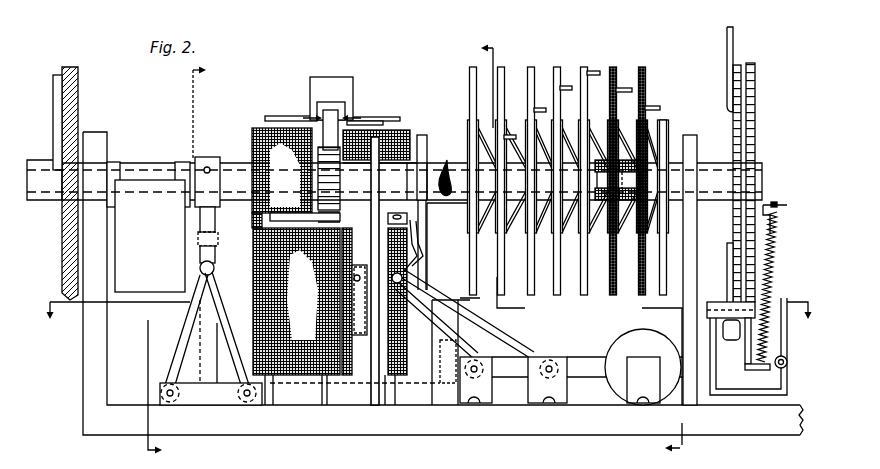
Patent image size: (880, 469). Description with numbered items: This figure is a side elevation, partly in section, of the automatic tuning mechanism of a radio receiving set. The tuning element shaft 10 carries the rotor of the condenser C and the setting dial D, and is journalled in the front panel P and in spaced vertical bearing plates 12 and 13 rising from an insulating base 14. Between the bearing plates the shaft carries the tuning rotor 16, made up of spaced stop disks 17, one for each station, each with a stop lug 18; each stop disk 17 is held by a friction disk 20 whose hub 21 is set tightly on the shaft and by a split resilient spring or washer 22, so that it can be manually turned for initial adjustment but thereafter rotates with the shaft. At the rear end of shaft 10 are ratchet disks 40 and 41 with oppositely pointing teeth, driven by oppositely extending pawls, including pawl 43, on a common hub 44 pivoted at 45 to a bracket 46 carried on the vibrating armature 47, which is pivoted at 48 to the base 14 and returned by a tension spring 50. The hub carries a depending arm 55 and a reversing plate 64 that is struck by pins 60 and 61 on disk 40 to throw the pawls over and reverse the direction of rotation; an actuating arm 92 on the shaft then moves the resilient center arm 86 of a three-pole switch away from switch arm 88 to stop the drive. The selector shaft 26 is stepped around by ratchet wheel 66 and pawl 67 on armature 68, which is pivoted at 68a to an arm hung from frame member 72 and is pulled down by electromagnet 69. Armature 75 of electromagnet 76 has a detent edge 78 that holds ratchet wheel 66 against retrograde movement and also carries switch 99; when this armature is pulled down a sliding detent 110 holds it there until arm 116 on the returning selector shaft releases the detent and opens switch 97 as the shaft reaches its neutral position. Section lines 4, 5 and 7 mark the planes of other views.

The front panel P is at (83, 330).
The tuning element shaft 10 is at (236, 170).
The setting dial D is at (62, 227).
The condenser C is at (150, 236).
The switch actuating arm 92 is at (218, 240).
The switch arm 88 is at (225, 320).
The resilient center arm 86 is at (207, 341).
The section line 5- 5 is at (182, 261).
The section line 7- 7 is at (426, 301).
The electromagnet 69 is at (254, 128).
The armature 68 is at (281, 116).
The frame member 72 is at (333, 77).
The pawl 67 is at (326, 140).
The ratchet wheel 66 is at (342, 150).
The armature pivot 68a is at (352, 118).
The bearing plate 12 is at (421, 135).
The selector shaft 26 is at (445, 165).
The armature 75 is at (270, 217).
The detent edge 78 is at (318, 216).
The electromagnet 76 is at (296, 301).
The switch 99 is at (357, 372).
The arm 116 is at (415, 252).
The detent 110 is at (405, 223).
The switch 97 is at (424, 278).
The armature pivot 48 is at (450, 383).
The insulating base 14 is at (453, 428).
The tuning rotor 16 is at (568, 157).
The hub 21 is at (609, 160).
The split resilient spring washer 22 is at (623, 158).
The stop disk 17 is at (535, 73).
The friction disk 20 is at (611, 128).
The stop lug 18 is at (645, 103).
The section line 4- 4 is at (589, 250).
The bearing plate 13 is at (689, 135).
The armature 47 is at (588, 357).
The bracket 46 is at (706, 343).
The reversing plate 64 is at (724, 330).
The pin 60 is at (727, 36).
The ratchet disk 40 is at (738, 65).
The ratchet disk 41 is at (752, 63).
The pin 61 is at (727, 266).
The hub pivot 45 is at (716, 304).
The depending arm 55 is at (760, 368).
The tension spring 50 is at (788, 360).
The hub 44 is at (731, 340).
The pawl 43 is at (745, 360).